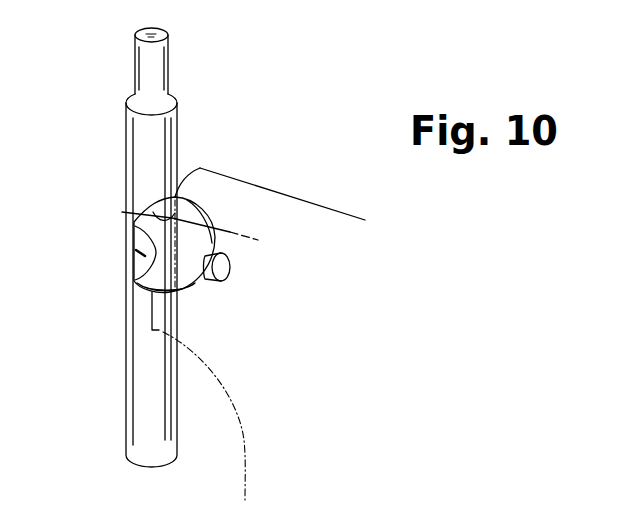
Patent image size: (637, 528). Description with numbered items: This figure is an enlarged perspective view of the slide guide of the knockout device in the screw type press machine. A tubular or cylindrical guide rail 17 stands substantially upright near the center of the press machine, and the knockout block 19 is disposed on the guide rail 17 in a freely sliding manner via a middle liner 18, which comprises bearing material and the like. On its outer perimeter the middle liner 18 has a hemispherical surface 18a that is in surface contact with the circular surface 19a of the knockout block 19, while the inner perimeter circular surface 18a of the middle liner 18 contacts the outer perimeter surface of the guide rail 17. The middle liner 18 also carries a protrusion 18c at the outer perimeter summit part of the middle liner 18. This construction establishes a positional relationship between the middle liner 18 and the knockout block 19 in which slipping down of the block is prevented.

The guide rail 17 is at (138, 390).
The middle liner 18 is at (206, 194).
The hemispherical surface 18a is at (150, 213).
The protrusion 18c is at (226, 272).
The knockout block 19 is at (245, 200).
The circular surface 19a is at (173, 197).